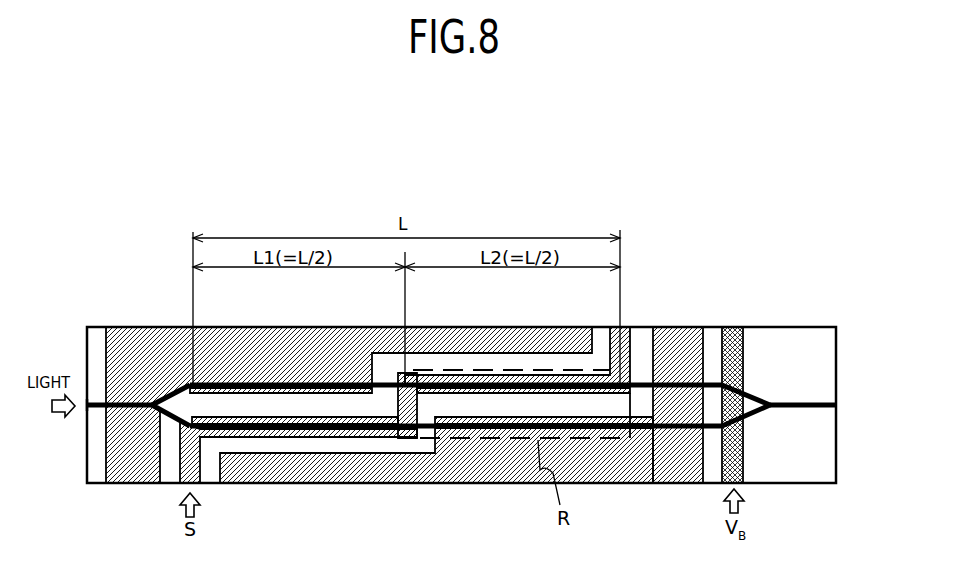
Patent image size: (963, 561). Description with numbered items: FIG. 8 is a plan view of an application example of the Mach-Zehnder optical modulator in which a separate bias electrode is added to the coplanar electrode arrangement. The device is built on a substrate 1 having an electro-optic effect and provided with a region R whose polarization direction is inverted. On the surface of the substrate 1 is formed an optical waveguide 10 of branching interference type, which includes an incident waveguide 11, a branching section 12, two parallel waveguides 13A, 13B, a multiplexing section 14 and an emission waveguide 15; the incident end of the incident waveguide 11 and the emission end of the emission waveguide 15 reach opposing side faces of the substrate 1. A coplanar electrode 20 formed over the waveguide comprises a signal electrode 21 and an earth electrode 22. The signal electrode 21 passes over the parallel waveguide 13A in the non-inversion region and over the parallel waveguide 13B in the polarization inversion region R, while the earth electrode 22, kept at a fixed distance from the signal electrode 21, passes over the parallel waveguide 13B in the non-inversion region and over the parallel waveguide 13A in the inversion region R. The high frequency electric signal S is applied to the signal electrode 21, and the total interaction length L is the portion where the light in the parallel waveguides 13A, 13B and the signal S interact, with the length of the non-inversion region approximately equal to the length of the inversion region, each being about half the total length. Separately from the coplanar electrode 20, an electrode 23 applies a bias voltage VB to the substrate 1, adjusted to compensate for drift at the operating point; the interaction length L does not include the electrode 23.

The substrate 1 is at (837, 352).
The optical waveguide 10 is at (95, 416).
The incident waveguide 11 is at (89, 400).
The branching section 12 is at (141, 402).
The parallel waveguide 13A is at (333, 433).
The parallel waveguide 13B is at (345, 383).
The multiplexing section 14 is at (774, 408).
The emission waveguide 15 is at (830, 411).
The coplanar electrode 20 is at (117, 484).
The signal electrode 21 is at (183, 480).
The earth electrode 22 is at (583, 327).
The electrode 23 is at (718, 478).